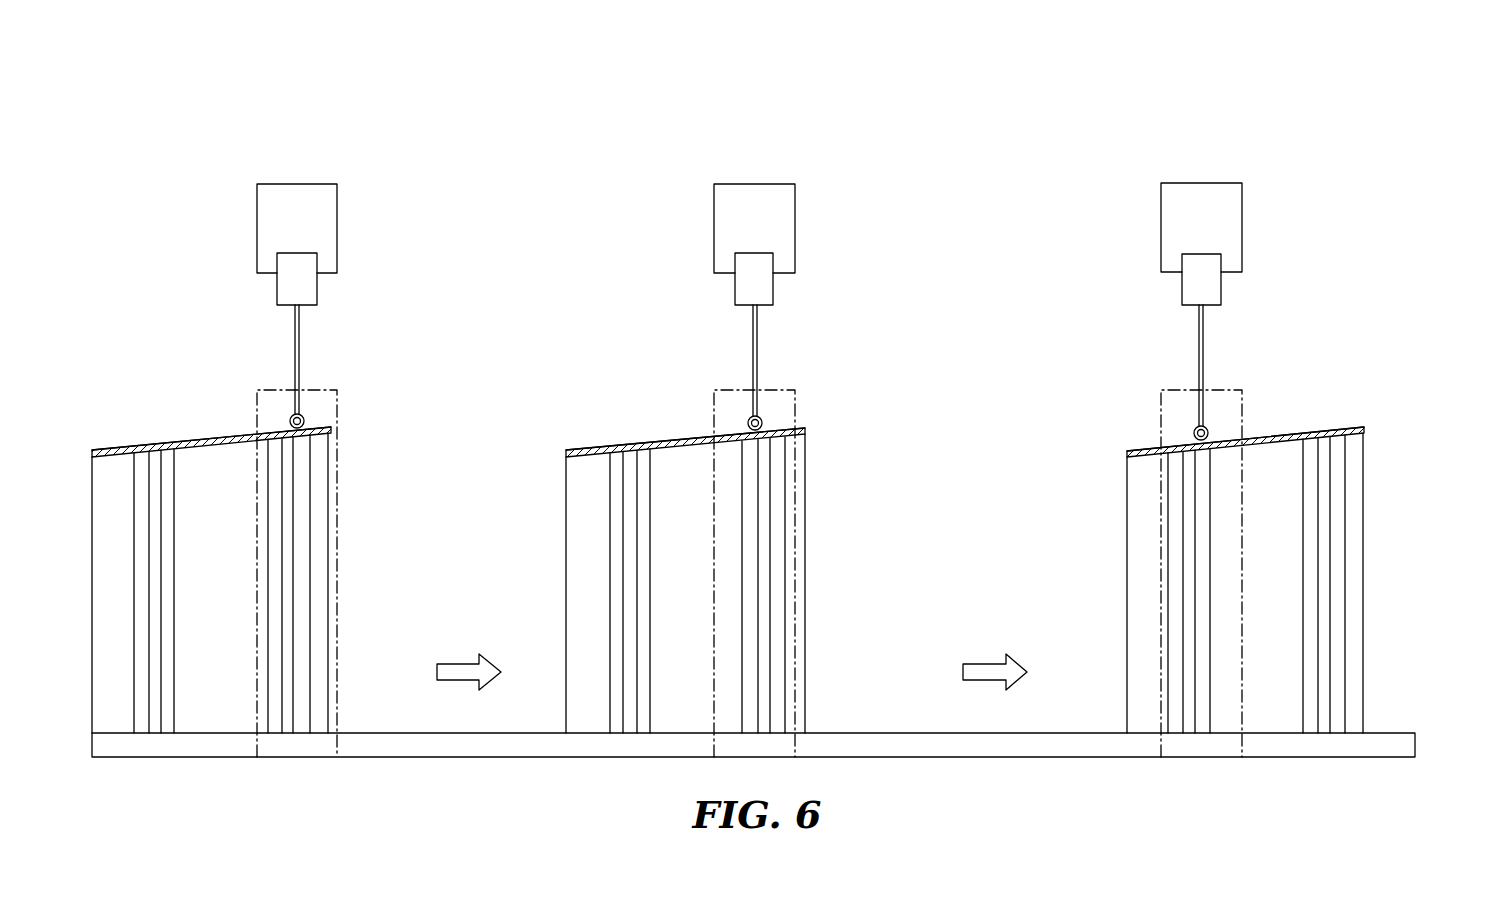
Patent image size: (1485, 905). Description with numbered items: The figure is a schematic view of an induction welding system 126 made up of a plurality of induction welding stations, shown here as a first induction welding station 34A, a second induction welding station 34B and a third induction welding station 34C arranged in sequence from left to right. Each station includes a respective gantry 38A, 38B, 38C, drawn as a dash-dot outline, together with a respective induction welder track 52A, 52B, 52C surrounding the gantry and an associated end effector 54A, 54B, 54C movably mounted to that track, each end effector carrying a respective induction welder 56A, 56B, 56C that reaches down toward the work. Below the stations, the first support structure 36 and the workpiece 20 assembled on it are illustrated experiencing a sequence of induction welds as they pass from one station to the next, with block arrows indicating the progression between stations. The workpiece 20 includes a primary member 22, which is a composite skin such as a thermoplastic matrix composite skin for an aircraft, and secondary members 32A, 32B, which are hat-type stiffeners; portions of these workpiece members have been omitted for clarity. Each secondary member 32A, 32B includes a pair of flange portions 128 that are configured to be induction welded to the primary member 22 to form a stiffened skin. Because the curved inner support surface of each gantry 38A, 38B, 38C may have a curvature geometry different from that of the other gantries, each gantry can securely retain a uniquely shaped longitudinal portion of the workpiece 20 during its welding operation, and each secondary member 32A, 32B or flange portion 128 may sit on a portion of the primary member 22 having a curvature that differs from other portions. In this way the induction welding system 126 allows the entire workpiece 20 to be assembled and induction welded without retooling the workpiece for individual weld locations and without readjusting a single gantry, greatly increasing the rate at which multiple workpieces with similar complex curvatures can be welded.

The induction welding system 126 is at (1036, 147).
The workpiece 20 is at (135, 438).
The first support structure 36 is at (187, 425).
The primary member 22 is at (240, 437).
The secondary member 32A is at (313, 568).
The secondary member 32B is at (182, 703).
The flange portions 128 is at (139, 503).
The first induction welding station 34A is at (316, 431).
The second induction welding station 34B is at (773, 431).
The third induction welding station 34C is at (1218, 431).
The induction welder track 52A is at (302, 193).
The induction welder track 52B is at (756, 193).
The induction welder track 52C is at (1206, 193).
The end effector 54A is at (330, 293).
The end effector 54B is at (783, 293).
The end effector 54C is at (1233, 293).
The induction welder 56A is at (283, 325).
The induction welder 56B is at (740, 325).
The induction welder 56C is at (1187, 315).
The gantry 38A is at (327, 407).
The gantry 38B is at (788, 407).
The gantry 38C is at (1222, 402).